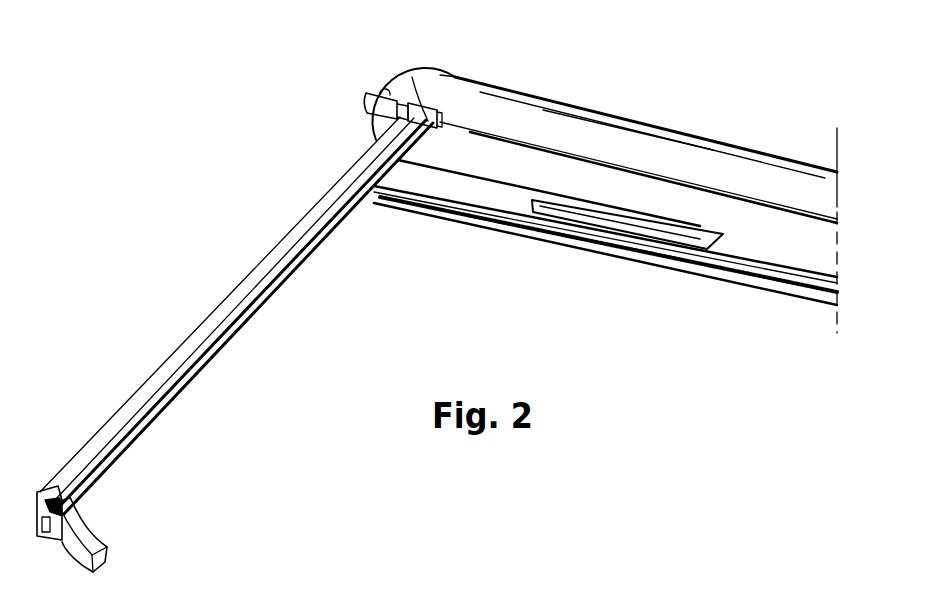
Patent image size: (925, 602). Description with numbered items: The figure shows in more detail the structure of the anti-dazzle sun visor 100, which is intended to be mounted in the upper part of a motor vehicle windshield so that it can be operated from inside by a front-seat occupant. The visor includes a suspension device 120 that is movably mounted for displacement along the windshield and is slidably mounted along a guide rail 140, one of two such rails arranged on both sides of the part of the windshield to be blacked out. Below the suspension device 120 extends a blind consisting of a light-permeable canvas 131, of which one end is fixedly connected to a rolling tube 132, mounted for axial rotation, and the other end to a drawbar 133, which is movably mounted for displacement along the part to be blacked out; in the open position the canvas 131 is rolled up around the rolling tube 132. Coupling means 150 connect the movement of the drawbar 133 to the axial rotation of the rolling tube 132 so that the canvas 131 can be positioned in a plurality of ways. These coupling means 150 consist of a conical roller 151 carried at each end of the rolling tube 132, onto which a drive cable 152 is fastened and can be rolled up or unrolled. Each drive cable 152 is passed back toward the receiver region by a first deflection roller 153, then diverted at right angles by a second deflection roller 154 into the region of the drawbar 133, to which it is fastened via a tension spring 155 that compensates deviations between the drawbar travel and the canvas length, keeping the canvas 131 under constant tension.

The anti-dazzle sun visor 100 is at (197, 243).
The suspension device 120 is at (737, 211).
The canvas 131 is at (480, 215).
The rolling tube 132 is at (542, 97).
The drawbar 133 is at (787, 257).
The guide rail 140 is at (166, 370).
The coupling means 150 is at (315, 212).
The conical roller 151 is at (432, 78).
The drive cable 152 is at (150, 425).
The first deflection roller 153 is at (50, 495).
The second deflection roller 154 is at (372, 146).
The tension spring 155 is at (608, 218).